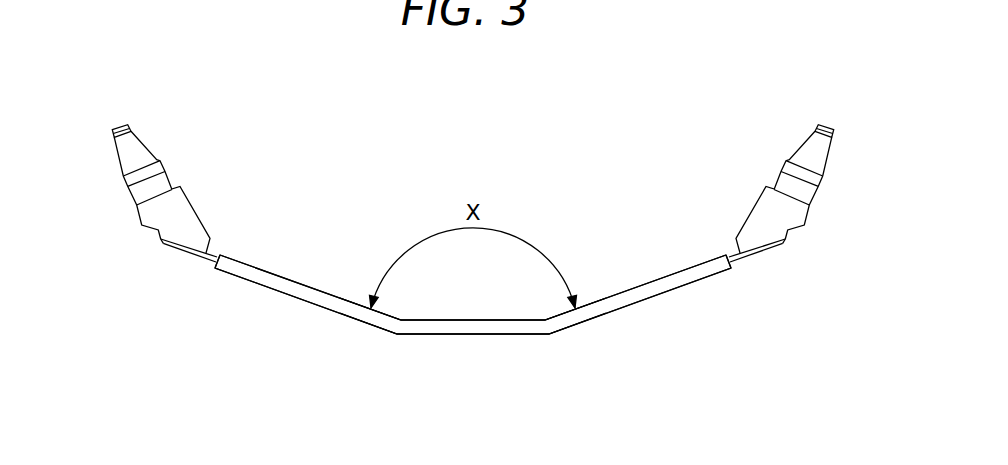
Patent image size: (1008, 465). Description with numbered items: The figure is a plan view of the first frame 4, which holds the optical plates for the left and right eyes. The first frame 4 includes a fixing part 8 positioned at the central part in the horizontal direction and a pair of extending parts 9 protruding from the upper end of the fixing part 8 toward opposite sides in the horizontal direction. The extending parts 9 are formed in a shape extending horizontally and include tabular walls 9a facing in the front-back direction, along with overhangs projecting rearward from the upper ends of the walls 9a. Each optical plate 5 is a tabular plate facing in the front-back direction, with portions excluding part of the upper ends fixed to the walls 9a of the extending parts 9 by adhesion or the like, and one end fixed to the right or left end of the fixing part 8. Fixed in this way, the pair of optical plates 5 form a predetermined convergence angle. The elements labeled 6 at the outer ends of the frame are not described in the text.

The first frame 4 is at (448, 333).
The optical plate 5 is at (193, 253).
The connector 6 is at (147, 213).
The fixing part 8 is at (510, 333).
The extending part 9 is at (290, 288).
The wall 9a is at (318, 298).